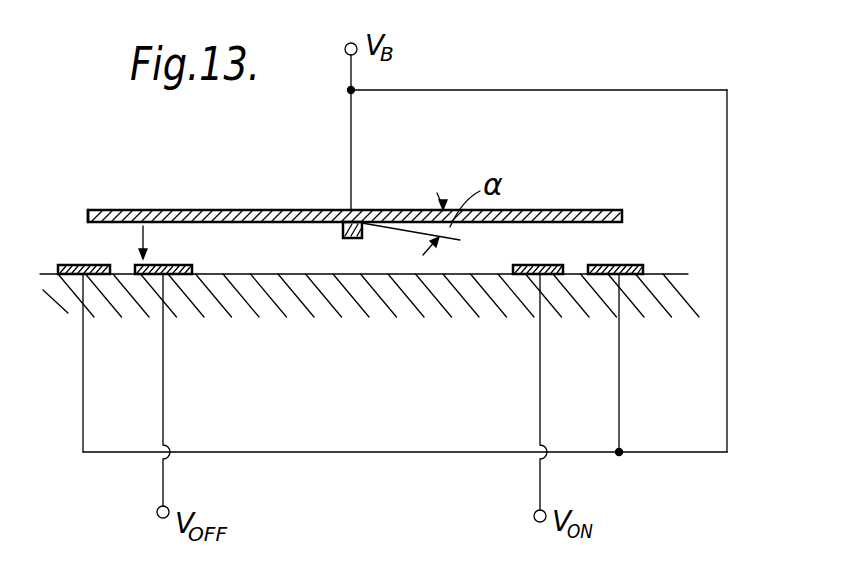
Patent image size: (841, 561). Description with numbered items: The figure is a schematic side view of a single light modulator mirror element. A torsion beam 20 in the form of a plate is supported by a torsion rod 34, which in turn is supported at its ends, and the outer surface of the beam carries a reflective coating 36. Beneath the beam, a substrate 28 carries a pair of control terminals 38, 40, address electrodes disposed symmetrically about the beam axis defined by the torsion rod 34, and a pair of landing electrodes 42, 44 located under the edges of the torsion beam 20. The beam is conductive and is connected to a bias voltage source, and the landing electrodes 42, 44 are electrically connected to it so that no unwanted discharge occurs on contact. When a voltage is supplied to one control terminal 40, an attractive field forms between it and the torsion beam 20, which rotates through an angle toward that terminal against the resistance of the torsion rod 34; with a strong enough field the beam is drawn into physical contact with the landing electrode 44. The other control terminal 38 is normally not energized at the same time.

The torsion beam 20 is at (607, 210).
The substrate 28 is at (58, 303).
The torsion rod 34 is at (343, 237).
The reflective coating 36 is at (122, 178).
The control terminal 38 is at (183, 264).
The control terminal 40 is at (548, 252).
The landing electrode 42 is at (64, 264).
The landing electrode 44 is at (634, 265).